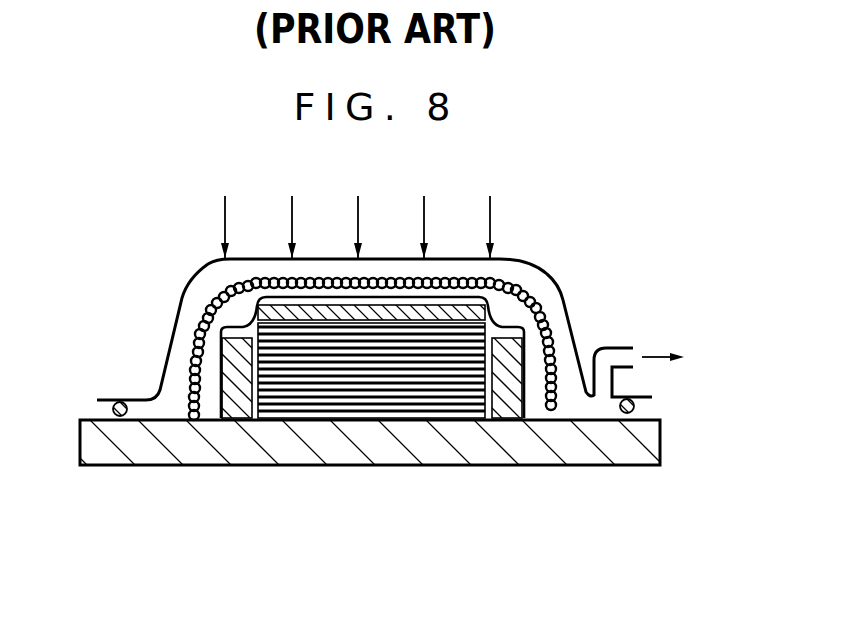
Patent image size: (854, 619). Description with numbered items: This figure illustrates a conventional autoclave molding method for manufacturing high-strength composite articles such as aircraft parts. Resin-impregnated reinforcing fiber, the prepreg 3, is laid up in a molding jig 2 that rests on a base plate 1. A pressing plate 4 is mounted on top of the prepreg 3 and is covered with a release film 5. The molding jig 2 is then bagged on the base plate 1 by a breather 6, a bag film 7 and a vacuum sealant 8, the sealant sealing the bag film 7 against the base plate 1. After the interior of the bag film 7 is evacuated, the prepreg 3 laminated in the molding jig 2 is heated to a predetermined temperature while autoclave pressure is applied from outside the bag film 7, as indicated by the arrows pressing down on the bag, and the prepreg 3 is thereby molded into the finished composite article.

The base plate 1 is at (276, 470).
The molding jig 2 is at (217, 371).
The prepreg 3 is at (390, 424).
The pressing plate 4 is at (450, 308).
The release film 5 is at (498, 310).
The breather 6 is at (206, 306).
The bag film 7 is at (562, 294).
The vacuum sealant 8 is at (112, 406).